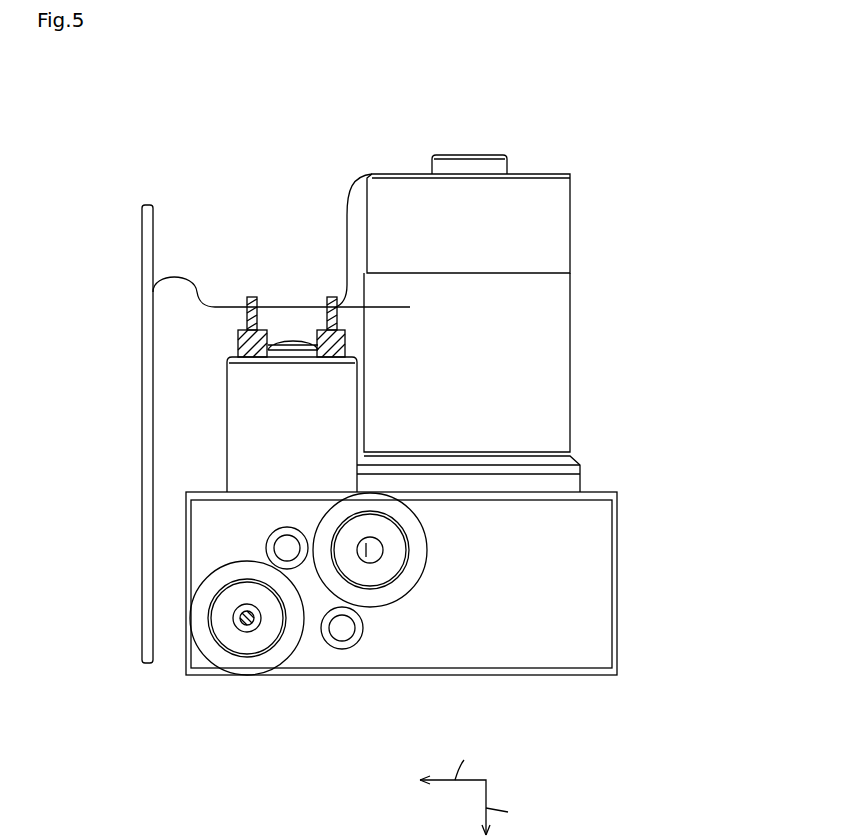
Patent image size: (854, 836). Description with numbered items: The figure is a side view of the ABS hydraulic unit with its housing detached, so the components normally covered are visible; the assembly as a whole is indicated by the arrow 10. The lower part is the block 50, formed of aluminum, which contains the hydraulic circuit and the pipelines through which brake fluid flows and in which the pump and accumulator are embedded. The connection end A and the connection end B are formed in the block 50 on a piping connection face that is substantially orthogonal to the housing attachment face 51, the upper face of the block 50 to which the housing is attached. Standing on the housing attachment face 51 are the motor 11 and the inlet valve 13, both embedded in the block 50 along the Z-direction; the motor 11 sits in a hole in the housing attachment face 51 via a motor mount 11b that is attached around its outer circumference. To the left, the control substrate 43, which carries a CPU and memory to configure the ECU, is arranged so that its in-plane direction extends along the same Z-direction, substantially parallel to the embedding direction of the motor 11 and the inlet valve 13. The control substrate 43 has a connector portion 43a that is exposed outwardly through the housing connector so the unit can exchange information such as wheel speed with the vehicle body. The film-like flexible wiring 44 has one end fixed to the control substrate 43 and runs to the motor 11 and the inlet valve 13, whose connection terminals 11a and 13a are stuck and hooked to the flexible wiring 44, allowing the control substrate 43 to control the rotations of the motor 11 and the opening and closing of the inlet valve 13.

The hydraulic pressure control device 10 is at (600, 330).
The motor 11 is at (551, 232).
The connection terminal 11a is at (470, 173).
The motor mount 11b is at (555, 378).
The inlet valve 13 is at (232, 437).
The connection terminal 13a is at (330, 297).
The control substrate 43 is at (142, 351).
The connector portion 43a is at (142, 228).
The flexible wiring 44 is at (227, 305).
The block 50 is at (610, 600).
The housing attachment face 51 is at (590, 492).
The connection end A is at (247, 640).
The connection end B is at (370, 575).